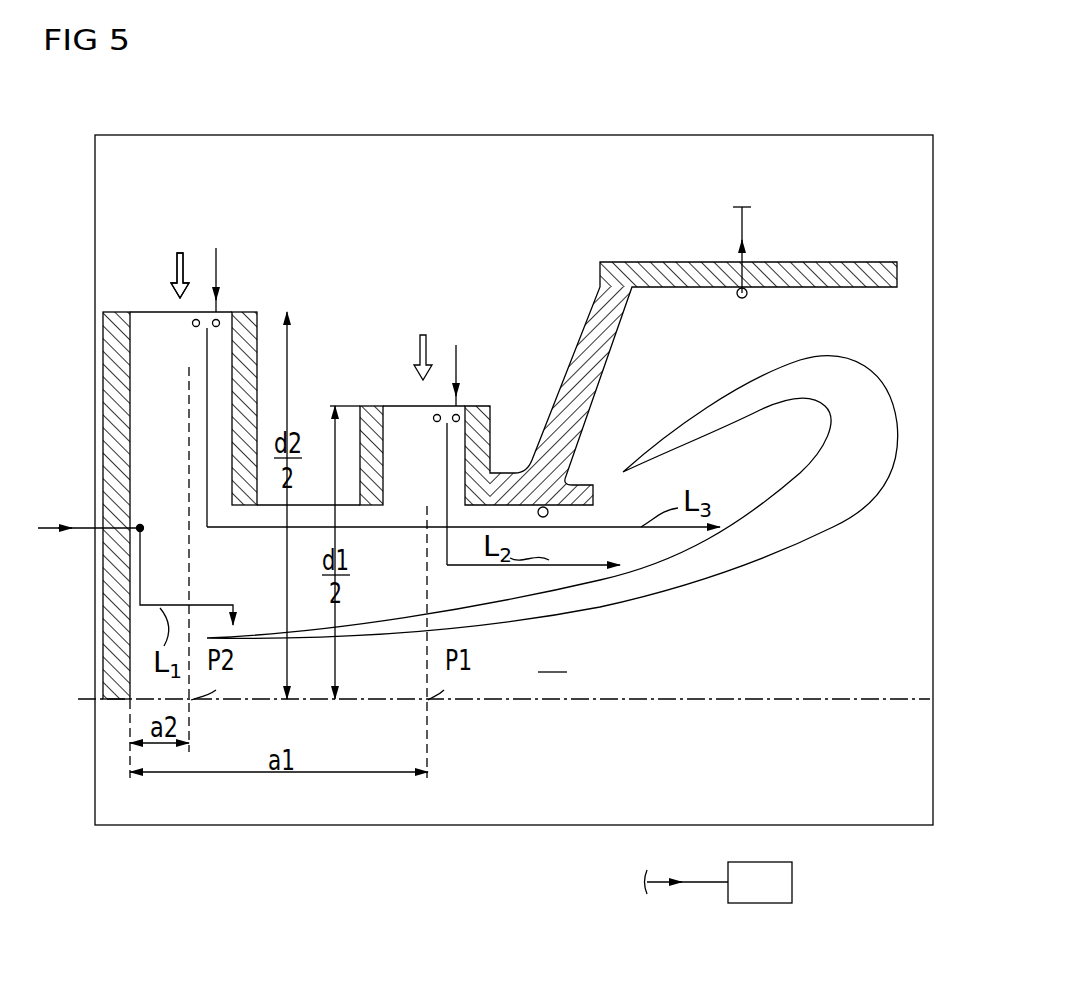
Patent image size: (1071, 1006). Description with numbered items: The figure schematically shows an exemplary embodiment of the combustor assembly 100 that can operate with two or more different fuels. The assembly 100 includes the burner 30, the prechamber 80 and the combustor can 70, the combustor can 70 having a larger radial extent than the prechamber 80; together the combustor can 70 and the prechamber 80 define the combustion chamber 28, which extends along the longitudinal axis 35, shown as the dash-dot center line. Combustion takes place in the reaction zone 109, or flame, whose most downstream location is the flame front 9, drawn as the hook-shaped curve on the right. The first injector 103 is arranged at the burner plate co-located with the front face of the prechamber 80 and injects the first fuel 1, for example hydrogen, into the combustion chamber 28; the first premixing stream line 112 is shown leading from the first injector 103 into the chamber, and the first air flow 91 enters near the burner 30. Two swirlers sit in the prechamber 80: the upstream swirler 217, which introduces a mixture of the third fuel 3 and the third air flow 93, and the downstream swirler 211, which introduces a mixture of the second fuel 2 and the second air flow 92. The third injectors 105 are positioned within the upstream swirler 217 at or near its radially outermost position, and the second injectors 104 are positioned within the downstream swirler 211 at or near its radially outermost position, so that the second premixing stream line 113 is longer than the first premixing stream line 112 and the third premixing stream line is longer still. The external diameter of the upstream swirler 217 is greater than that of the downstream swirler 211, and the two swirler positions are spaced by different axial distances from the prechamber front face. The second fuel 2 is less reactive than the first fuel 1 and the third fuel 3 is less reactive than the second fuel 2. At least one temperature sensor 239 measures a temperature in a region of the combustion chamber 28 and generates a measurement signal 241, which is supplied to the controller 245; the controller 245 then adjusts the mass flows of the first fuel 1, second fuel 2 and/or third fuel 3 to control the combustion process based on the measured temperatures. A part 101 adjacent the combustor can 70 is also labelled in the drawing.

The combustor assembly 100 is at (878, 103).
The first fuel 1 is at (86, 526).
The second fuel 2 is at (459, 393).
The third fuel 3 is at (212, 302).
The flame front 9 is at (866, 398).
The combustion chamber 28 is at (552, 658).
The burner 30 is at (101, 406).
The longitudinal axis 35 is at (790, 706).
The combustor can 70 is at (609, 221).
The prechamber 80 is at (424, 274).
The first air flow 91 is at (173, 260).
The second air flow 92 is at (432, 350).
The third air flow 93 is at (180, 275).
The platform 101 is at (672, 274).
The first injector 103 is at (141, 525).
The second injector 104 is at (458, 416).
The third injector 105 is at (200, 321).
The reaction zone 109 is at (792, 550).
The first premixing stream line 112 is at (231, 600).
The second premixing stream line 113 is at (207, 404).
The downstream swirler 211 is at (381, 371).
The upstream swirler 217 is at (246, 284).
The temperature sensor 239 is at (550, 518).
The measurement signal 241 is at (748, 229).
The controller 245 is at (768, 905).